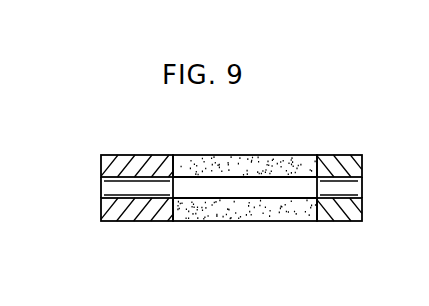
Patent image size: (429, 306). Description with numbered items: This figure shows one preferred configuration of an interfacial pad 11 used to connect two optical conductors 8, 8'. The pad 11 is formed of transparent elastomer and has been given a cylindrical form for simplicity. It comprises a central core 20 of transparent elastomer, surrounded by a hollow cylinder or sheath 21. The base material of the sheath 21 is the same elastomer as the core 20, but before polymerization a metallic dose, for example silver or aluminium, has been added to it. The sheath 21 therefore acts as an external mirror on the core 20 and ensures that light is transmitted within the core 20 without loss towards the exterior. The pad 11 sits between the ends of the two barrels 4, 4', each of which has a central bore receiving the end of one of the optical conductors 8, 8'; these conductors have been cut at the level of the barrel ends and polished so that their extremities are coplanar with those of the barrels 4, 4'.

The barrel 4 is at (119, 168).
The barrel 4' is at (350, 156).
The optical conductor 8 is at (126, 225).
The optical conductor 8' is at (345, 224).
The pad 11 is at (277, 149).
The core 20 is at (282, 185).
The sheath 21 is at (227, 202).